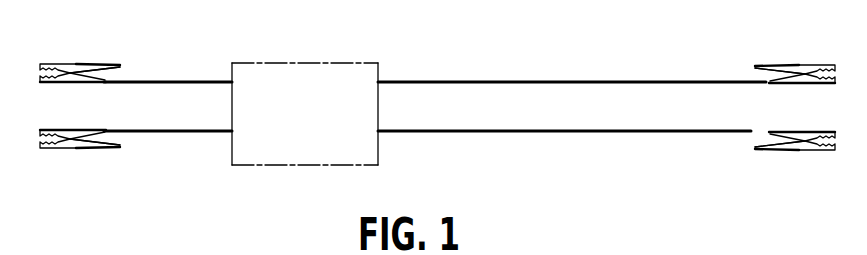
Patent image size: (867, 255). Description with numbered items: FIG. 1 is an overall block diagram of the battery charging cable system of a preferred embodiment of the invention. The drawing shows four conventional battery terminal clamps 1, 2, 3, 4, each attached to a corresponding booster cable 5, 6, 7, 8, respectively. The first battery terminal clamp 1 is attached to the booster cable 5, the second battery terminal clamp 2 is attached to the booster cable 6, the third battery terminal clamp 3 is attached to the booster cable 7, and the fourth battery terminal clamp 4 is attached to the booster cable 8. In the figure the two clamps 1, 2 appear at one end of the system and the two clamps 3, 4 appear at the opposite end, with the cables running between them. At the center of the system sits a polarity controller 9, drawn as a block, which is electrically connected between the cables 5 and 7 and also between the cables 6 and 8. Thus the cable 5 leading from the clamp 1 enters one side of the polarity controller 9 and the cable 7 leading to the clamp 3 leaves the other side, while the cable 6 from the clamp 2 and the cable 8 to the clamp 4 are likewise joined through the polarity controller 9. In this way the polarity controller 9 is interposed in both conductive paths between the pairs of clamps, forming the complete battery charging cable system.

The battery terminal clamp 1 is at (67, 63).
The battery terminal clamp 2 is at (72, 149).
The battery terminal clamp 3 is at (780, 66).
The battery terminal clamp 4 is at (775, 150).
The booster cable 5 is at (173, 79).
The booster cable 6 is at (170, 134).
The booster cable 7 is at (520, 80).
The booster cable 8 is at (520, 134).
The polarity controller 9 is at (288, 70).